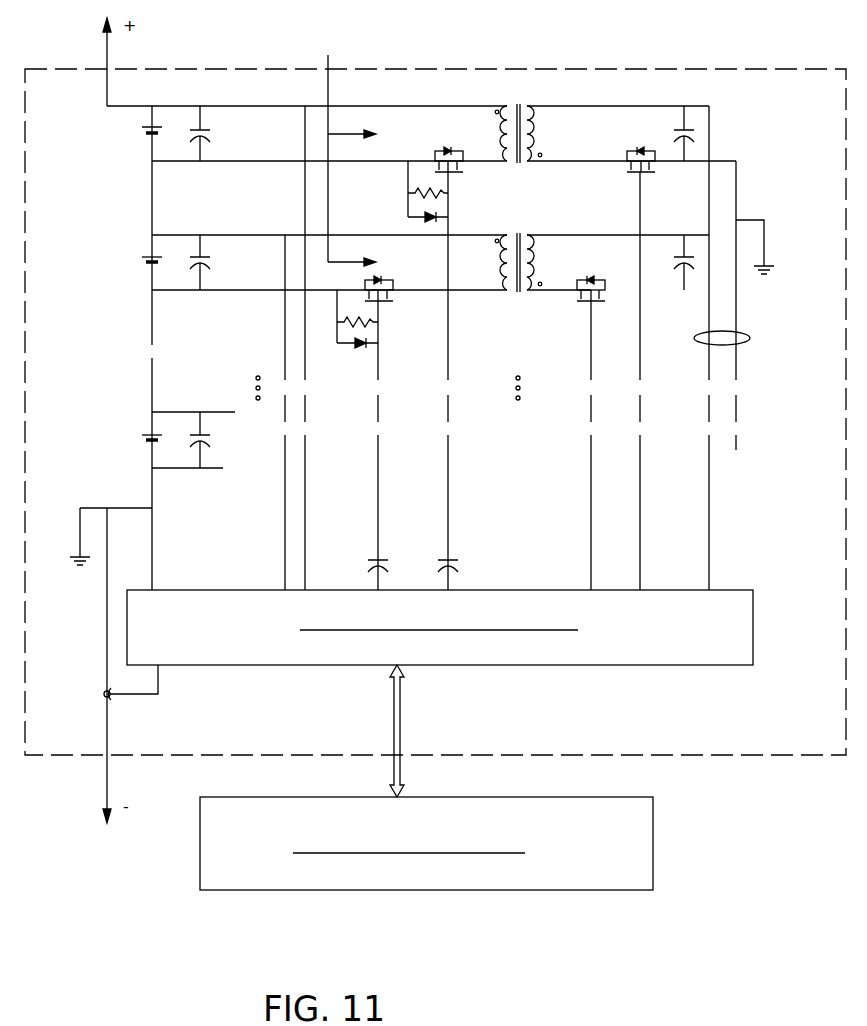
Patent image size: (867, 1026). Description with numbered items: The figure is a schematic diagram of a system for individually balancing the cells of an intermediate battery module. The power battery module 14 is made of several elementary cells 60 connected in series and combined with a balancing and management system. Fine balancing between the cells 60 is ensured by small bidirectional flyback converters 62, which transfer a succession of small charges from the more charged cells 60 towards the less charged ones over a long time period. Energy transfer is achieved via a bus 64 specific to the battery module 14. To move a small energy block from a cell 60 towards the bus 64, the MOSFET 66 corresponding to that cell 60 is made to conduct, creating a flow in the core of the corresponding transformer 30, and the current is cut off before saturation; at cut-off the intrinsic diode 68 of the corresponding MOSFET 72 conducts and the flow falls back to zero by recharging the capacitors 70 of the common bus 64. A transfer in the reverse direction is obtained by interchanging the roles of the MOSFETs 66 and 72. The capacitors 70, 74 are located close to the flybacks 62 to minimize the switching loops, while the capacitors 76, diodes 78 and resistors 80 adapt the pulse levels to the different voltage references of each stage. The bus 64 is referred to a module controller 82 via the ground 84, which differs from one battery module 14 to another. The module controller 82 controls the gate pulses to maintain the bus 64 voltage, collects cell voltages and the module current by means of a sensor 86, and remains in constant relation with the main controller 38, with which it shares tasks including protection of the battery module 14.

The power battery module 14 is at (768, 69).
The transformer 30 is at (518, 233).
The main controller 38 is at (623, 892).
The elementary cell 60 is at (148, 134).
The bidirectional flyback converter 62 is at (345, 147).
The bus 64 is at (746, 341).
The MOSFET 66 is at (452, 174).
The intrinsic diode 68 is at (447, 149).
The capacitor 70 is at (692, 130).
The MOSFET 72 is at (644, 174).
The capacitor 74 is at (208, 140).
The capacitor 76 is at (448, 560).
The diode 78 is at (421, 218).
The resistor 80 is at (445, 198).
The module controller 82 is at (686, 668).
The ground 84 is at (766, 262).
The sensor 86 is at (102, 697).